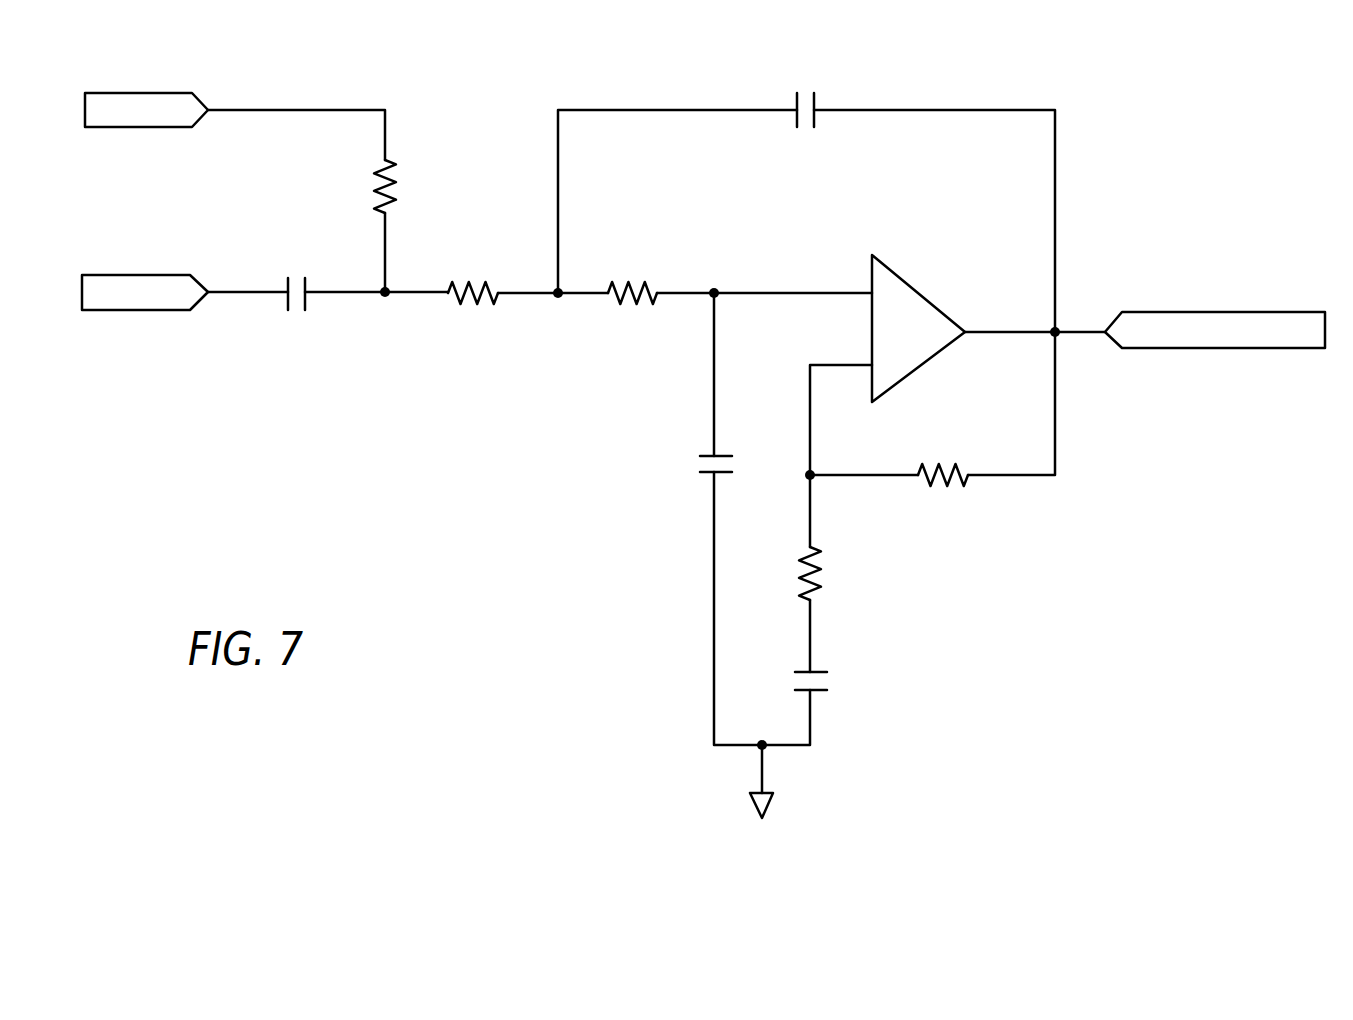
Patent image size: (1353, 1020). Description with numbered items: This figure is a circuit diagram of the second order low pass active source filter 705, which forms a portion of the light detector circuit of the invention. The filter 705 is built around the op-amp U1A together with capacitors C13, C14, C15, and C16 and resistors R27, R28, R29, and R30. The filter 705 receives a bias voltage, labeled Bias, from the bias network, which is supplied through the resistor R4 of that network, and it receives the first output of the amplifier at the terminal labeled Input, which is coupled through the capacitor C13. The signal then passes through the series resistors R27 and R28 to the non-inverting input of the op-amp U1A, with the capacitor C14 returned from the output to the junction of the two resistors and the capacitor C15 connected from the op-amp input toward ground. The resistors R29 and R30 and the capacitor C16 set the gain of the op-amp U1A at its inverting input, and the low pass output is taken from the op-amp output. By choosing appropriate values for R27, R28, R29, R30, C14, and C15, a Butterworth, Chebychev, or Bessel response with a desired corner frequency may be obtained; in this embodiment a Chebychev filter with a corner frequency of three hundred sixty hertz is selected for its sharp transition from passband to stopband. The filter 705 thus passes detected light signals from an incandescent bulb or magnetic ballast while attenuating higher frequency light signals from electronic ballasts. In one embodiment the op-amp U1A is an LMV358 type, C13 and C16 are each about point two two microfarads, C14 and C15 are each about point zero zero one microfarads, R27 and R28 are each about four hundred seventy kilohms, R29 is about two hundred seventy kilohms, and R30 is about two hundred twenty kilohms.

The low pass filter 705 is at (1215, 168).
The resistor R4 is at (398, 187).
The capacitor C13 is at (292, 273).
The resistor R27 is at (474, 283).
The resistor R28 is at (630, 280).
The capacitor C14 is at (803, 88).
The op-amp U1A is at (916, 305).
The capacitor C15 is at (700, 462).
The resistor R30 is at (945, 462).
The resistor R29 is at (820, 565).
The capacitor C16 is at (823, 682).